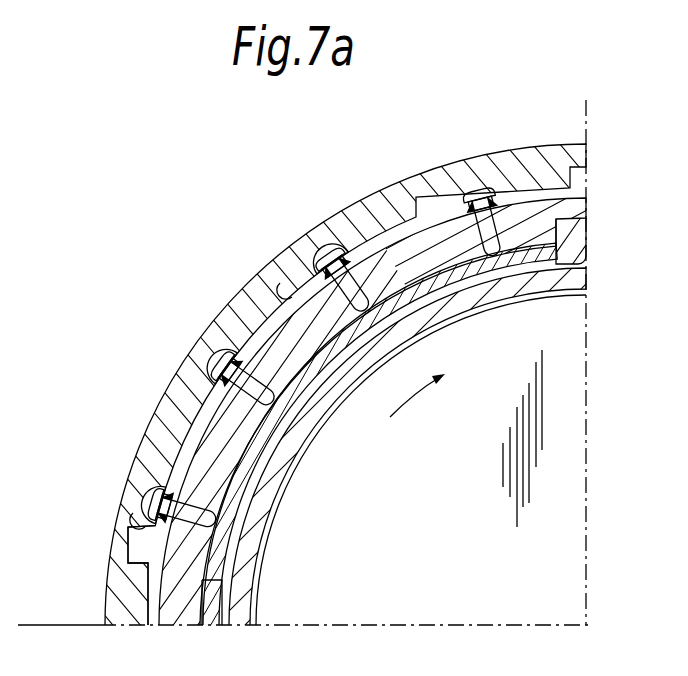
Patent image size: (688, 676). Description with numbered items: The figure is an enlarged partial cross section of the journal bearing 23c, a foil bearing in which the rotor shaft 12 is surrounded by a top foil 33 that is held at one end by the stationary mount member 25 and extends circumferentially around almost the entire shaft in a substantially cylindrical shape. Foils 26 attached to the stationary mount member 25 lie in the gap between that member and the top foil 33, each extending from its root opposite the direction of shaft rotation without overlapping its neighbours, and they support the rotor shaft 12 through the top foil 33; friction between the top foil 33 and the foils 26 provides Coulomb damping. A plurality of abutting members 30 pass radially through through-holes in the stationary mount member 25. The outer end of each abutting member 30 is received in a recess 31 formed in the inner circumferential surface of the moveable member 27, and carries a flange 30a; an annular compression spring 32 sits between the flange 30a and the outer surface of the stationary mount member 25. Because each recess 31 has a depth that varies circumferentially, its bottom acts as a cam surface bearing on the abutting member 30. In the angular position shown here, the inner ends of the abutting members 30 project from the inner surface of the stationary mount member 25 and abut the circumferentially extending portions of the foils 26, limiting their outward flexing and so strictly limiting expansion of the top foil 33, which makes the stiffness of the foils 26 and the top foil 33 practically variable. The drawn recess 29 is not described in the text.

The rotor shaft 12 is at (462, 591).
The journal bearing 23c is at (232, 194).
The stationary mount member 25 is at (394, 257).
The foils 26 is at (524, 262).
The moveable member 27 is at (545, 163).
The recess 29 is at (135, 578).
The abutting members 30 is at (484, 235).
The flange 30a is at (477, 188).
The recesses 31 is at (292, 288).
The annular compression spring 32 is at (325, 252).
The top foil 33 is at (422, 320).